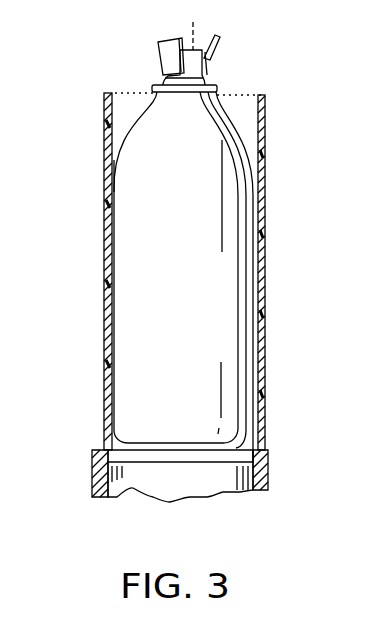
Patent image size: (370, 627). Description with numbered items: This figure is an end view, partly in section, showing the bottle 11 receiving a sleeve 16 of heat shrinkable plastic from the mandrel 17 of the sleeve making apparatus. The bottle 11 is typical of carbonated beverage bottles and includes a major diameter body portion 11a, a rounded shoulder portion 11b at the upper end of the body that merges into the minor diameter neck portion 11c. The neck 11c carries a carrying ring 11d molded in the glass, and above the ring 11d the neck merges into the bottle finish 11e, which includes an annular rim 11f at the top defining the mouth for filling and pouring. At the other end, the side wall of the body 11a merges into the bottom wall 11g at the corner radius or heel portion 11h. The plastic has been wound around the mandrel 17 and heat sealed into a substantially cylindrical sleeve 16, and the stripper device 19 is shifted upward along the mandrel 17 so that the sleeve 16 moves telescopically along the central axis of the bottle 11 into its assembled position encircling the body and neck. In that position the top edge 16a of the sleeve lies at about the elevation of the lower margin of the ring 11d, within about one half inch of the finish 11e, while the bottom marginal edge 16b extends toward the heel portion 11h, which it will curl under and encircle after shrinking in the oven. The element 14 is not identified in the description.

The bottle 11 is at (191, 279).
The body portion 11a is at (112, 303).
The shoulder portion 11b is at (112, 163).
The neck portion 11c is at (142, 117).
The carrying ring 11d is at (215, 88).
The bottle finish 11e is at (163, 67).
The annular rim 11f is at (192, 25).
The bottom wall 11g is at (168, 443).
The heel portion 11h is at (107, 428).
The tear strip 14 is at (219, 42).
The sleeve 16 is at (267, 138).
The top edge 16a is at (123, 92).
The bottom marginal edge 16b is at (215, 452).
The mandrel 17 is at (203, 485).
The stripper device 19 is at (268, 472).